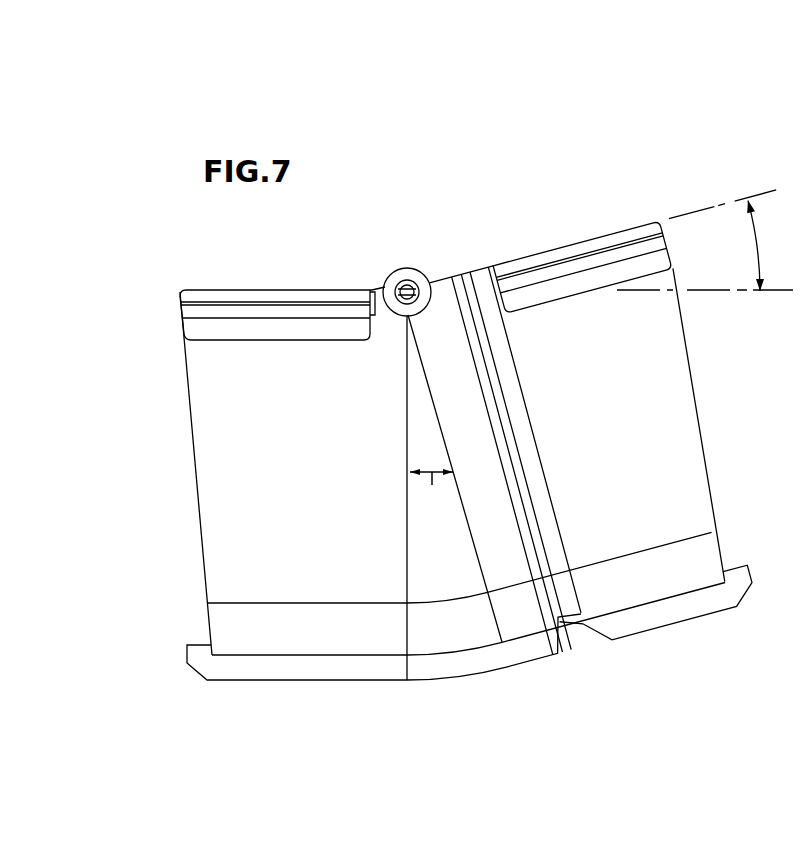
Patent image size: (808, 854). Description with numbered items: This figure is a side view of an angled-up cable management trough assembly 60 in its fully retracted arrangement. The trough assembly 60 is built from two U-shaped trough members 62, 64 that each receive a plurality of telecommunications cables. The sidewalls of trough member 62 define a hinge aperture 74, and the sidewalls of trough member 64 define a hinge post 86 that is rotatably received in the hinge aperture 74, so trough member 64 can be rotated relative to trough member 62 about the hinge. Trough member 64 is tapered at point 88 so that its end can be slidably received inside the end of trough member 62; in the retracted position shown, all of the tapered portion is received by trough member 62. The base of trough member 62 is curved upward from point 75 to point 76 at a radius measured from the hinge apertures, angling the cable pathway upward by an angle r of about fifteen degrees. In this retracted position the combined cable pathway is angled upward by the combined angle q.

The trough assembly 60 is at (500, 203).
The trough member 62 is at (228, 480).
The trough member 64 is at (645, 585).
The hinge aperture 74 is at (400, 285).
The point 75 is at (406, 656).
The point 76 is at (500, 645).
The hinge post 86 is at (413, 287).
The point 88 is at (521, 461).